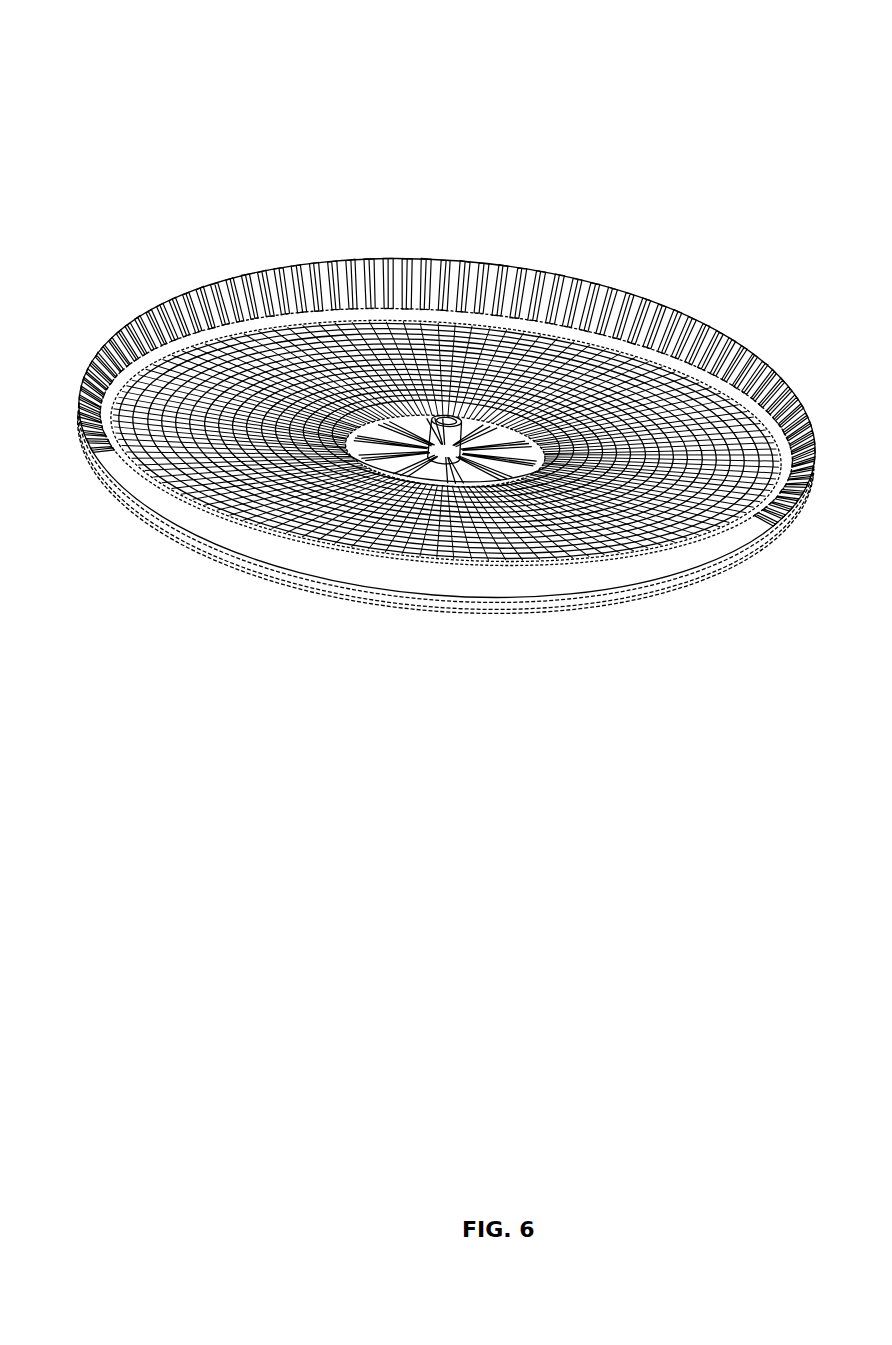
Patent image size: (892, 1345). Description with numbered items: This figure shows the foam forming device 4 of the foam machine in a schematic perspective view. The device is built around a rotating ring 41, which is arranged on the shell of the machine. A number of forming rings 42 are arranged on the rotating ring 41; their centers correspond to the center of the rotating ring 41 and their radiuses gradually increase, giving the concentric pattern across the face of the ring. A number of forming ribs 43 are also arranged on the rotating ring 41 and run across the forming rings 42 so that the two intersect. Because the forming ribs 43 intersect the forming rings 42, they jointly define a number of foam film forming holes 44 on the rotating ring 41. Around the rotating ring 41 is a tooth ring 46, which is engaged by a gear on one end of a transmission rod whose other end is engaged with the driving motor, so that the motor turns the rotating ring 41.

The foam forming device 4 is at (486, 42).
The rotating ring 41 is at (183, 517).
The forming rings 42 is at (655, 385).
The forming ribs 43 is at (577, 350).
The foam film forming holes 44 is at (765, 405).
The tooth ring 46 is at (285, 273).